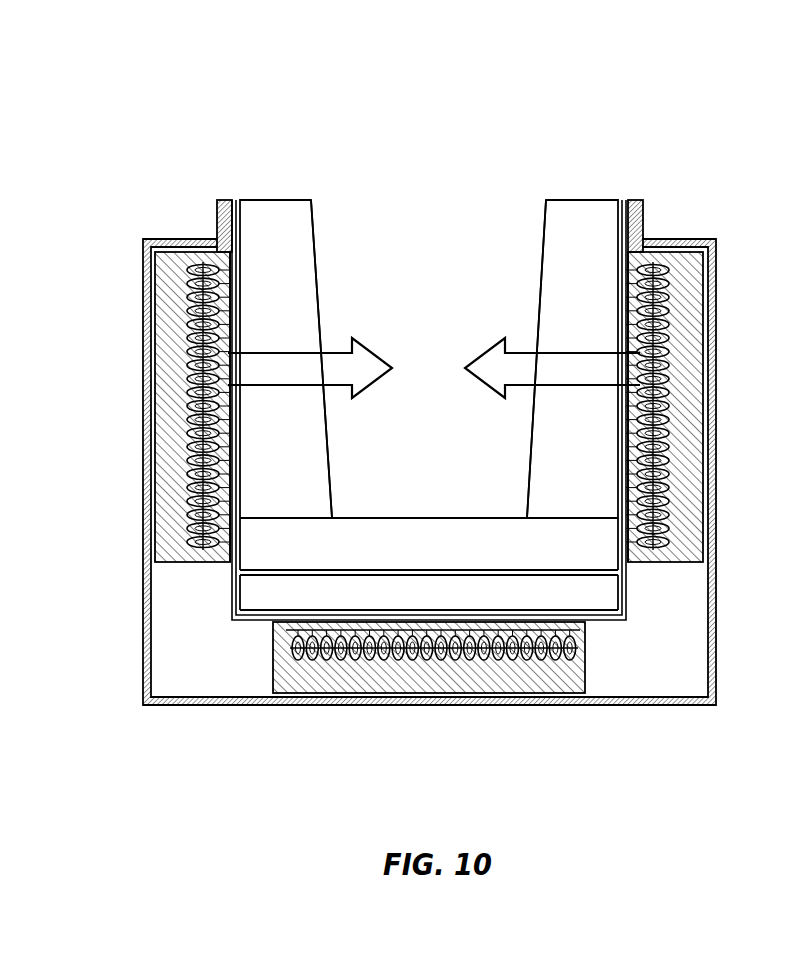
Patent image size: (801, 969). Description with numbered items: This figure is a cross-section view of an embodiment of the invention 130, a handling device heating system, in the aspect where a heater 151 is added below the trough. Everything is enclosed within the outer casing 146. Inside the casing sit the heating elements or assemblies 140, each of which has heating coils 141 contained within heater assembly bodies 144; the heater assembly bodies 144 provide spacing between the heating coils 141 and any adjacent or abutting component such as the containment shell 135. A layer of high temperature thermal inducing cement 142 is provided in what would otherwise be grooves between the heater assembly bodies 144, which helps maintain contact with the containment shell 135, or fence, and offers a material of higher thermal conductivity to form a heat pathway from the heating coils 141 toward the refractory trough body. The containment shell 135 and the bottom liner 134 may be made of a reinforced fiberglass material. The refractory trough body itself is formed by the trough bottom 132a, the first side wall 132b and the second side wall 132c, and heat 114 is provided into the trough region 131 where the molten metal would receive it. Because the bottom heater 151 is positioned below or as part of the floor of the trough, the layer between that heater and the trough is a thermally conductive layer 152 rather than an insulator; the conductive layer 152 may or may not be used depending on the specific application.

The embodiment of the invention 130 is at (475, 135).
The outer casing 146 is at (142, 258).
The heating coils 141 is at (182, 243).
The heating elements or assemblies 140 is at (692, 334).
The high temperature thermal inducing cement 142 is at (230, 302).
The heater assembly bodies 144 is at (168, 373).
The containment shell 135 is at (234, 199).
The first side wall 132b is at (298, 242).
The second side wall 132c is at (560, 232).
The trough bottom 132a is at (487, 557).
The crucible cavity 131 is at (453, 425).
The thermally conductive layer 152 is at (418, 593).
The bottom liner 134 is at (518, 587).
The heat 114 is at (492, 352).
The heater 151 is at (342, 697).